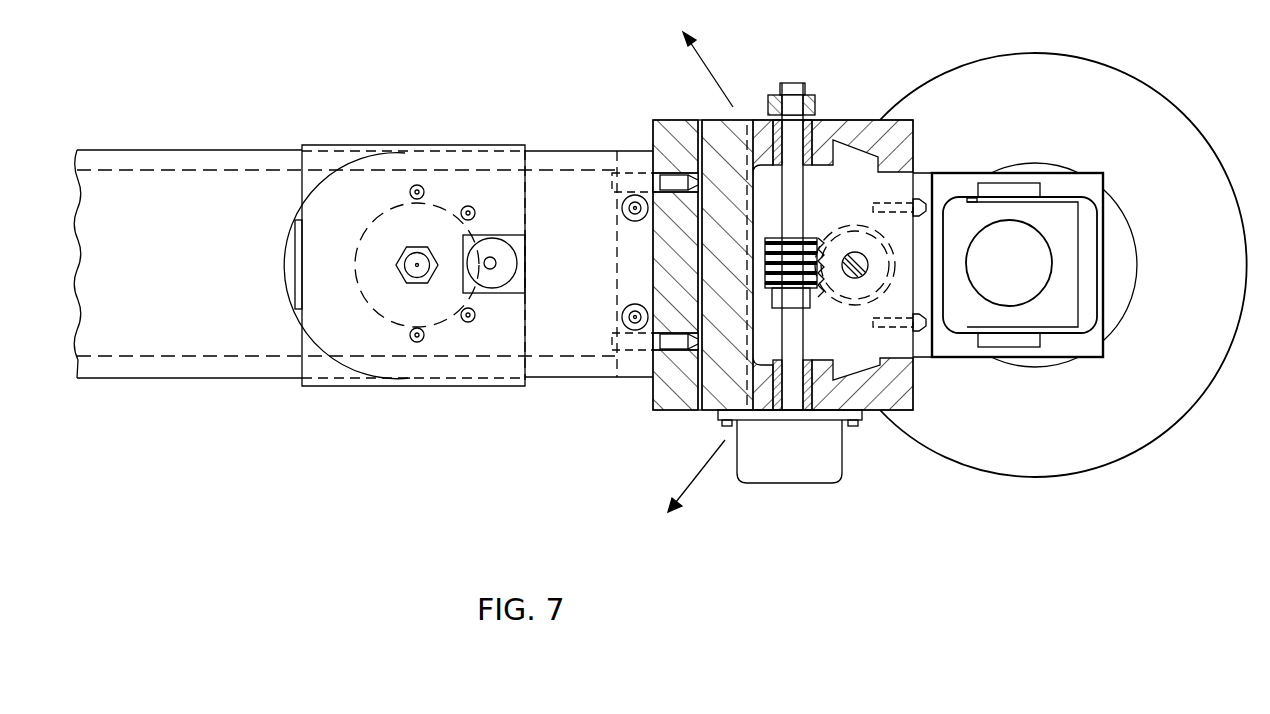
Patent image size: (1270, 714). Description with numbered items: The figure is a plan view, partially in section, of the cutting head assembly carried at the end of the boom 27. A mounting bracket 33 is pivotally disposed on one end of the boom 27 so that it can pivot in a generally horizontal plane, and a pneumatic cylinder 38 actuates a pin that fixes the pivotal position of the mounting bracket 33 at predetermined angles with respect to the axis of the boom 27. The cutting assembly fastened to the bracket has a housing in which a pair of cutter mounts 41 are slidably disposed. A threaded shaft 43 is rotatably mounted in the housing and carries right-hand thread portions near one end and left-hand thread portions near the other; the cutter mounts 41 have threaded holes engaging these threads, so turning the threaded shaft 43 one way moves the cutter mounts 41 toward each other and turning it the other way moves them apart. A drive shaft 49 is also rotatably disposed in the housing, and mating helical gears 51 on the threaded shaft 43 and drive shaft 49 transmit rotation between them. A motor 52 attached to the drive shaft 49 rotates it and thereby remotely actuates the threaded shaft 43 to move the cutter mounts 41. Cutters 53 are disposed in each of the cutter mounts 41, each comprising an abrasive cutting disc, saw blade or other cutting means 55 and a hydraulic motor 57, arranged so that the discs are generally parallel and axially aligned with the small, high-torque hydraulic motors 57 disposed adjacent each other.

The boom 27 is at (213, 163).
The mounting bracket 33 is at (584, 166).
The pneumatic cylinder 38 is at (506, 253).
The cutter mounts 41 is at (904, 186).
The threaded shaft 43 is at (853, 279).
The drive shaft 49 is at (805, 100).
The helical gears 51 is at (842, 239).
The motor 52 is at (400, 318).
The cutters 53 is at (1008, 190).
The cutting means 55 is at (1207, 172).
The hydraulic motor 57 is at (1070, 298).